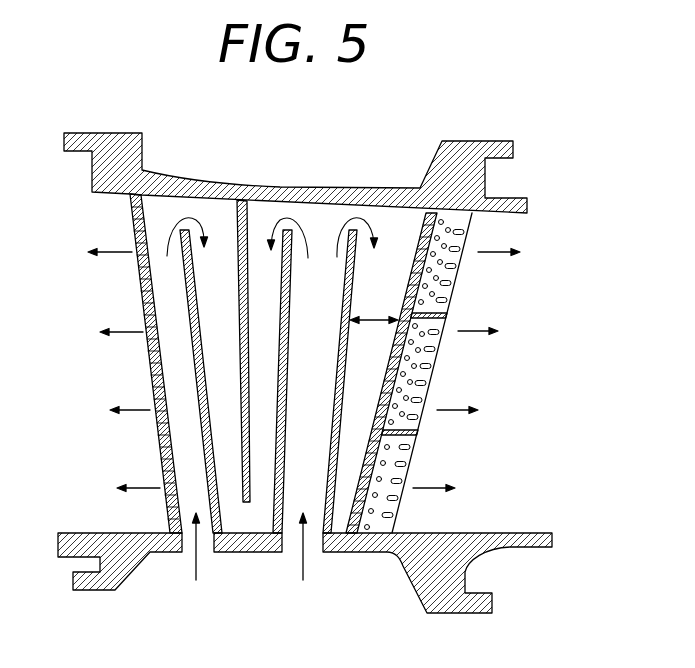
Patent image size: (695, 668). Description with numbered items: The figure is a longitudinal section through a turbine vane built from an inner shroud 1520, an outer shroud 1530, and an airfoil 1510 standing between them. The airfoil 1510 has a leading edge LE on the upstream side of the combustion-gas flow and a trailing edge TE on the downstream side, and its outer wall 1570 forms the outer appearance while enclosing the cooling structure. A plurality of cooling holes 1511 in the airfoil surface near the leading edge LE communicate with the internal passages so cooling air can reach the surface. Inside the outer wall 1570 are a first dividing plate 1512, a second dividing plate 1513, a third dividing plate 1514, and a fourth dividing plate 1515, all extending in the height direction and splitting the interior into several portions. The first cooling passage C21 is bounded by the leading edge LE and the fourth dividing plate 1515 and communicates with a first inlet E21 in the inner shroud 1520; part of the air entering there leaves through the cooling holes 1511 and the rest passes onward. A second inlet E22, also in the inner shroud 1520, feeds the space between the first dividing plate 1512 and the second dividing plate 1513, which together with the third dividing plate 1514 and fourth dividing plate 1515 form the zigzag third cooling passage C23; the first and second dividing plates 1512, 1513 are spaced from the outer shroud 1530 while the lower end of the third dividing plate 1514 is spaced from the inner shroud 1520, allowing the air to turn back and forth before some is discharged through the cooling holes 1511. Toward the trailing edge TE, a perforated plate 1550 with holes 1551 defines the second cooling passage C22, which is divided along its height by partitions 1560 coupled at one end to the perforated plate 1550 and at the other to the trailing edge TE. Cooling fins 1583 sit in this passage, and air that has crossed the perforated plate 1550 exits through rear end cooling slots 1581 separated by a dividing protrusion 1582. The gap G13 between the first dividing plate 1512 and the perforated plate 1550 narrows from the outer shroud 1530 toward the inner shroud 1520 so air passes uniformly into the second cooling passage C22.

The airfoil 1510 is at (148, 358).
The cooling holes 1511 is at (140, 290).
The first dividing plate 1512 is at (357, 260).
The second dividing plate 1513 is at (286, 246).
The third dividing plate 1514 is at (241, 228).
The fourth dividing plate 1515 is at (187, 255).
The inner shroud 1520 is at (538, 533).
The outer shroud 1530 is at (467, 182).
The perforated plate 1550 is at (408, 472).
The holes 1551 is at (365, 507).
The partitions 1560 is at (403, 436).
The outer wall 1570 is at (158, 390).
The rear end cooling slots 1581 is at (437, 372).
The dividing protrusion 1582 is at (447, 302).
The cooling fins 1583 is at (410, 391).
The leading edge LE is at (132, 220).
The trailing edge TE is at (475, 225).
The first cooling passage C21 is at (190, 446).
The second cooling passage C22 is at (445, 288).
The third cooling passage C23 is at (305, 394).
The gap G13 is at (374, 309).
The first inlet E21 is at (208, 552).
The second inlet E22 is at (290, 552).